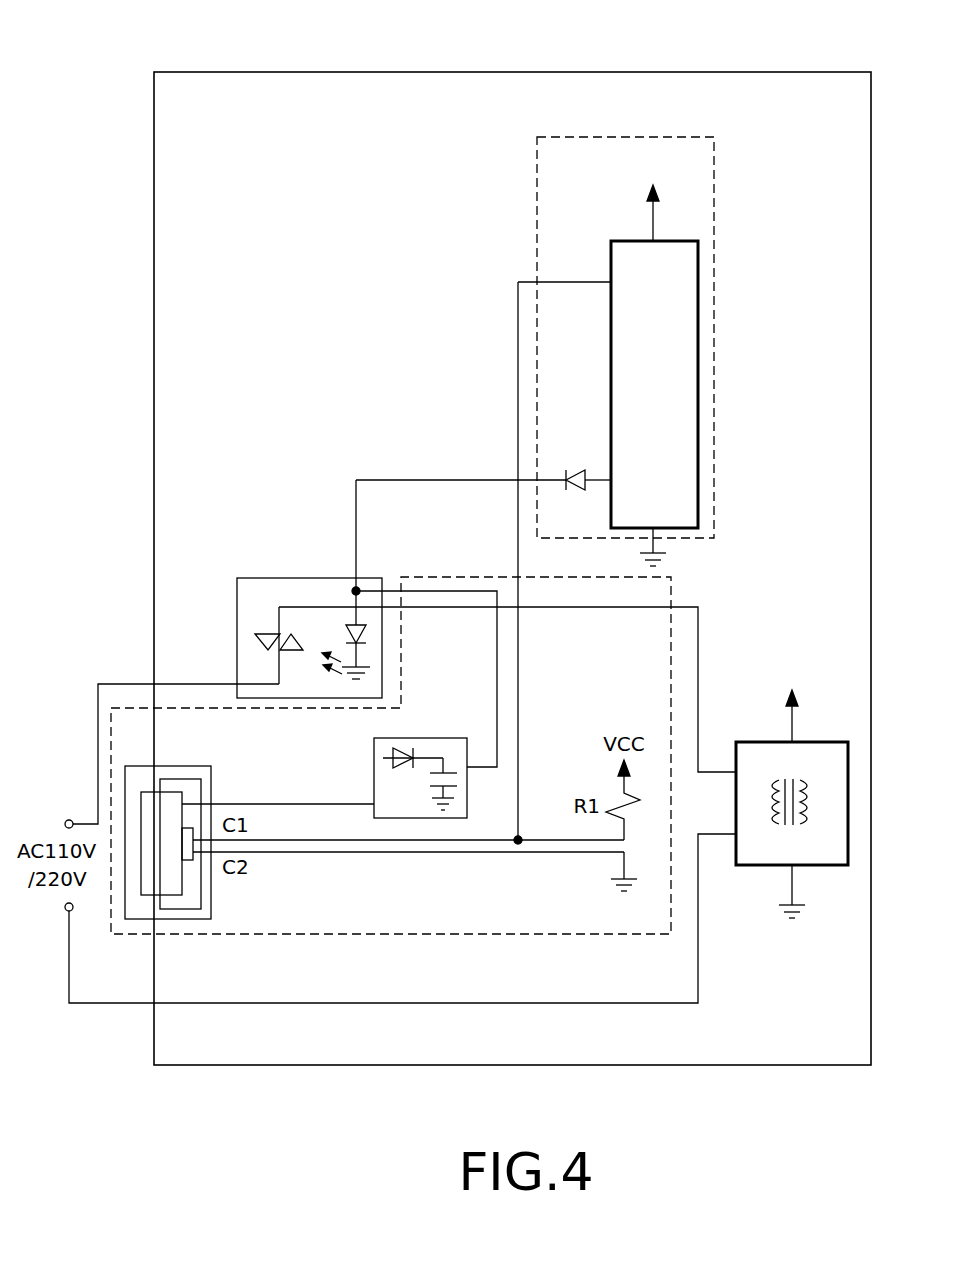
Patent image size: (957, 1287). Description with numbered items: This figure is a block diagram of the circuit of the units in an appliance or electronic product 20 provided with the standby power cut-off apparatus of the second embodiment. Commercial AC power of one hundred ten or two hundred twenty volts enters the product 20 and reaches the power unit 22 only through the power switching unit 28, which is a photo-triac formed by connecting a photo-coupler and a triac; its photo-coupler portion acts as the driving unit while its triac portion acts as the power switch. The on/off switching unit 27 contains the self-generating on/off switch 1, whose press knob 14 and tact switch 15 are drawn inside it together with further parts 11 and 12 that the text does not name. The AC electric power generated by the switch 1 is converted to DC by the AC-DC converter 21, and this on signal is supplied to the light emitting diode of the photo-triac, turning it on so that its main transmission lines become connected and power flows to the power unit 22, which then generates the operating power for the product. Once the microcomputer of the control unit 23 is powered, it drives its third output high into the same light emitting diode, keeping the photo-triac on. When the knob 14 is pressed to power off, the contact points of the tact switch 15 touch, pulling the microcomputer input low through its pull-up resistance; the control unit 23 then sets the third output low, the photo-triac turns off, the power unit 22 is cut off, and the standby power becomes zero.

The corresponding product 20 is at (498, 72).
The control unit 23 is at (649, 137).
The power switching unit 28 is at (311, 578).
The on/off switching unit 27 is at (111, 738).
The AC-DC converter 21 is at (427, 738).
The connection line 12 is at (310, 804).
The self-generating on/off switch 1 is at (134, 785).
The switch housing 11 is at (185, 782).
The press knob 14 is at (151, 888).
The tact switch 15 is at (187, 866).
The power unit 22 is at (826, 866).